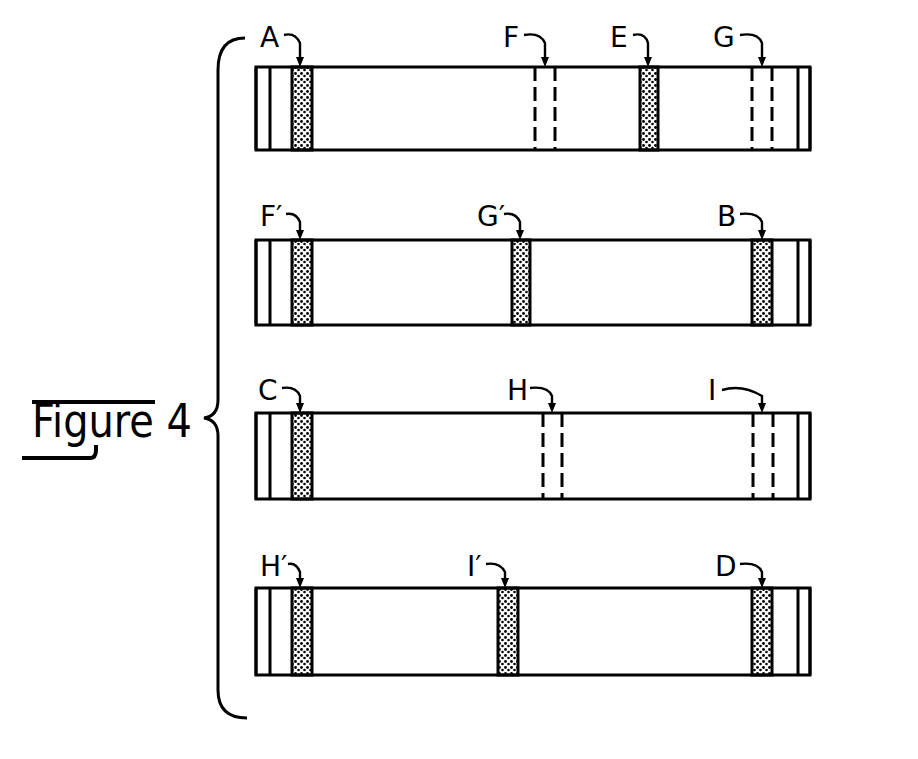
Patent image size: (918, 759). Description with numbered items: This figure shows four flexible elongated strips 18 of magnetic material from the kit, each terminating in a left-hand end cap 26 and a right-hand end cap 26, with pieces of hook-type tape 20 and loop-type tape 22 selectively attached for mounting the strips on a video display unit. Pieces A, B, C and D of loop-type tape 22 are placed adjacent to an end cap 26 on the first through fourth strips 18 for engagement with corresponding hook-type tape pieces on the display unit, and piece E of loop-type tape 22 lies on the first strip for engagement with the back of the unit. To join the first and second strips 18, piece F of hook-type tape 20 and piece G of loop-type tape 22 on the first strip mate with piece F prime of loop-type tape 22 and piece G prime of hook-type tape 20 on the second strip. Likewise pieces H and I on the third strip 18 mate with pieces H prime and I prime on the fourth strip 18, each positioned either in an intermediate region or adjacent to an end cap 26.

The strip of magnetic material 18 is at (437, 149).
The hook-type tape 20 is at (545, 112).
The loop-type tape 22 is at (312, 110).
The end cap 26 is at (265, 150).